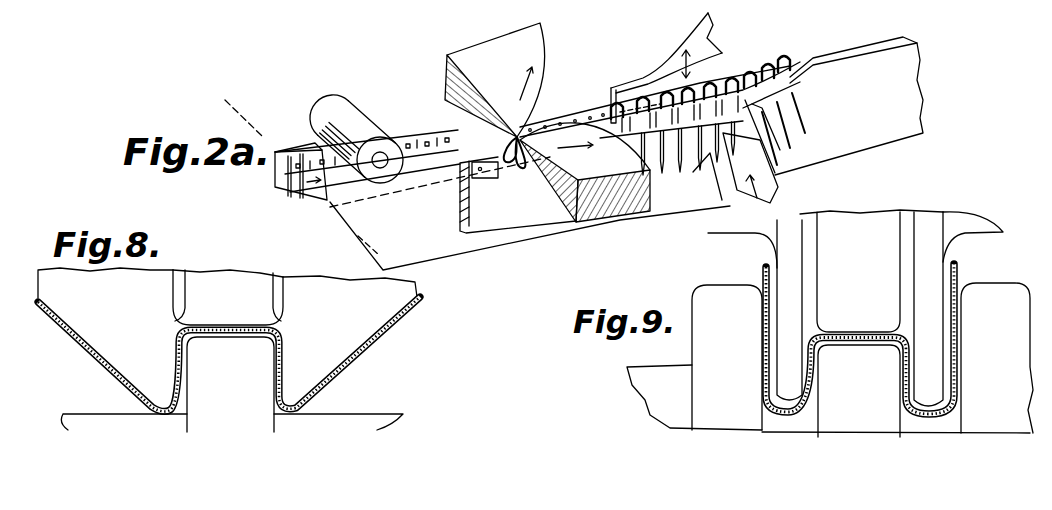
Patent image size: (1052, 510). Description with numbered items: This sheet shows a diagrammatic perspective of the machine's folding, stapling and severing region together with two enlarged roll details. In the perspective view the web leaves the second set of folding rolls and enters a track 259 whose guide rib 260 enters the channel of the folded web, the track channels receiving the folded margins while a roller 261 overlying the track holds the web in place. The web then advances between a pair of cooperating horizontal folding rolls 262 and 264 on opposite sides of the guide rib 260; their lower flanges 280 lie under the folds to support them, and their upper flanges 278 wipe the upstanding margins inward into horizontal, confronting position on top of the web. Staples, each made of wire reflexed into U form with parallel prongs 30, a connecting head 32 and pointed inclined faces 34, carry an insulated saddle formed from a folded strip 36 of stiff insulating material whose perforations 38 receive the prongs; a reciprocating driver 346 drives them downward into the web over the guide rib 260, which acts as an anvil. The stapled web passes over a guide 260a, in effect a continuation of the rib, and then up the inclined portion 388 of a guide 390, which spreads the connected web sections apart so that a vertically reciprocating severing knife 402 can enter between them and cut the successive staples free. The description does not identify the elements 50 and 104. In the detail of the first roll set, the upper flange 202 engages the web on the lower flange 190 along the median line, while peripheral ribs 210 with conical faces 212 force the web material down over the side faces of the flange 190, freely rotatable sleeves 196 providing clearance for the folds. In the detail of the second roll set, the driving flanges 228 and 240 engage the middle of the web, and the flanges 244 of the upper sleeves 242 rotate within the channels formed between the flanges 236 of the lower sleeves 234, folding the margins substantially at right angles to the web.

In FIG. 2A, the element 104 is at (52, 16).
In FIG. 2A, the liner strip 50 is at (287, 177).
In FIG. 8, the liner strip 50 is at (256, 343).
In FIG. 9, the liner strip 50 is at (764, 267).
In FIG. 2A, the track 259 is at (353, 252).
In FIG. 2A, the guide rib 260 is at (298, 195).
In FIG. 2A, the guide 260a is at (710, 155).
In FIG. 2A, the roller 261 is at (353, 115).
In FIG. 2A, the folding roll 262 is at (490, 47).
In FIG. 2A, the folding roll 264 is at (601, 214).
In FIG. 2A, the upper flanges 278 is at (522, 133).
In FIG. 2A, the lower flanges 280 is at (527, 167).
In FIG. 2A, the driver 346 is at (633, 98).
In FIG. 2A, the prongs 30 is at (800, 102).
In FIG. 2A, the head 32 is at (753, 77).
In FIG. 2A, the inclined faces 34 is at (807, 118).
In FIG. 2A, the insulating strip 36 is at (783, 60).
In FIG. 2A, the perforations 38 is at (800, 85).
In FIG. 2A, the inclined portion 388 is at (799, 60).
In FIG. 2A, the guide 390 is at (863, 66).
In FIG. 2A, the severing knife 402 is at (778, 190).
In FIG. 8, the flange 202 is at (235, 278).
In FIG. 8, the peripheral ribs 210 is at (127, 350).
In FIG. 8, the conical faces 212 is at (88, 344).
In FIG. 8, the flange 190 is at (230, 384).
In FIG. 8, the sleeves 196 is at (90, 417).
In FIG. 9, the sleeves 234 is at (655, 375).
In FIG. 9, the peripheral flanges 236 is at (712, 310).
In FIG. 9, the flange 240 is at (877, 227).
In FIG. 9, the sleeves 242 is at (745, 233).
In FIG. 9, the peripheral flanges 244 is at (785, 343).
In FIG. 9, the flange 228 is at (859, 391).